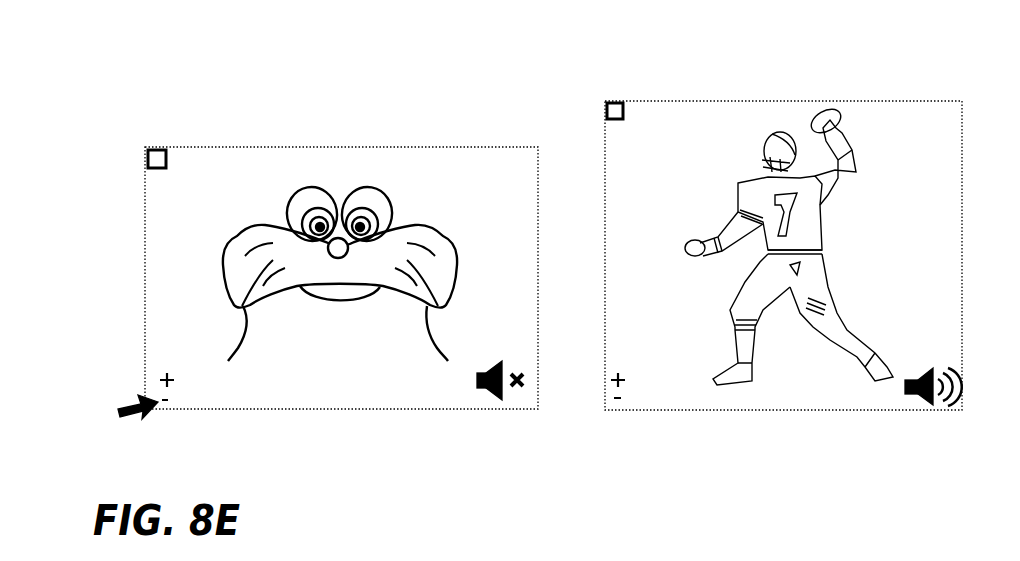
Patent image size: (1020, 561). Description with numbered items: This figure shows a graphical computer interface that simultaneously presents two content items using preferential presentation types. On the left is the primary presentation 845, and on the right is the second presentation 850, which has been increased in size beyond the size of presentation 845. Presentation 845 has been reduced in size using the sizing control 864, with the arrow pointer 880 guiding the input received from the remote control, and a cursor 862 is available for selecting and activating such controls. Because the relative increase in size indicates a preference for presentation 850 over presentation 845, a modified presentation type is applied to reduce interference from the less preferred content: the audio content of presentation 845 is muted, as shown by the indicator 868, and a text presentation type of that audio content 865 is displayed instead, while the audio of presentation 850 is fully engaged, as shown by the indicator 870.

The primary presentation 845 is at (357, 128).
The second presentation 850 is at (810, 100).
The cursor 862 is at (146, 148).
The sizing control 864 is at (170, 387).
The text presentation type of the audio content 865 is at (360, 403).
The indicator 868 is at (503, 397).
The indicator 870 is at (923, 402).
The arrow pointer 880 is at (128, 398).